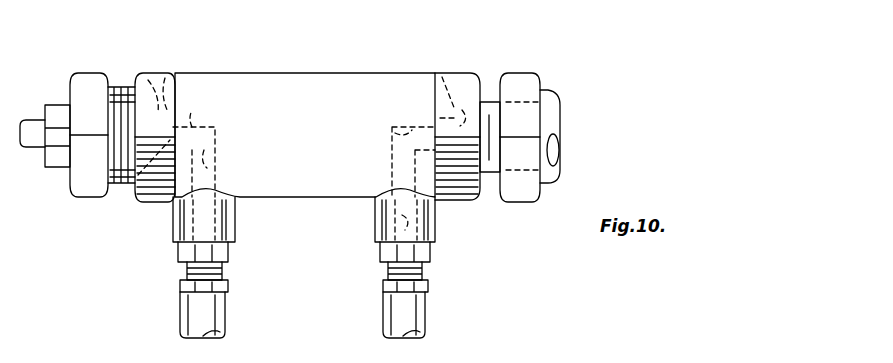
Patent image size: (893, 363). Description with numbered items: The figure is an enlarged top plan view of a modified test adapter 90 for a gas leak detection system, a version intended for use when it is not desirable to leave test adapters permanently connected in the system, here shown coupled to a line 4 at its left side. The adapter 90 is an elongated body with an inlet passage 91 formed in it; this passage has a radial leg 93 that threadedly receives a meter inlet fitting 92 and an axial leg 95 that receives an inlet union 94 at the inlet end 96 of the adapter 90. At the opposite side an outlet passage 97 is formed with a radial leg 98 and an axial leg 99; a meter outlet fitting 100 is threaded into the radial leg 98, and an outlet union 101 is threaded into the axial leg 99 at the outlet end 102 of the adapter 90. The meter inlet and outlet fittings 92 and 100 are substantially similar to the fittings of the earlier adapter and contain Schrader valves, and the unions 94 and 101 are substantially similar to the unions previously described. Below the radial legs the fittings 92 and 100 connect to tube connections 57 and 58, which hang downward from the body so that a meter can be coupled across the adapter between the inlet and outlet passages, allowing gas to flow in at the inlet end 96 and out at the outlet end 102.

The supply line 4 is at (30, 118).
The meter inlet connection 57 is at (430, 312).
The meter outlet connection 58 is at (180, 318).
The test adapter 90 is at (316, 64).
The inlet passage 91 is at (412, 125).
The meter inlet fitting 92 is at (422, 268).
The radial leg 93 is at (380, 222).
The inlet union 94 is at (527, 73).
The axial leg 95 is at (444, 75).
The inlet end 96 is at (466, 73).
The outlet passage 97 is at (202, 120).
The radial leg 98 is at (215, 150).
The axial leg 99 is at (178, 73).
The meter outlet fitting 100 is at (185, 270).
The outlet union 101 is at (85, 73).
The outlet end 102 is at (152, 73).